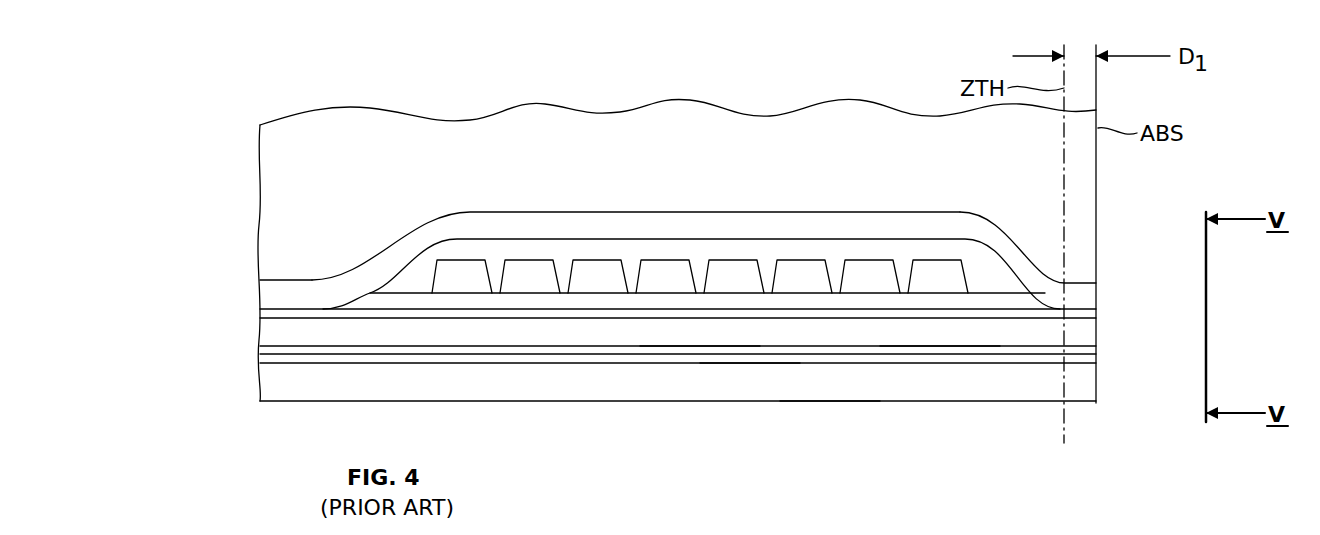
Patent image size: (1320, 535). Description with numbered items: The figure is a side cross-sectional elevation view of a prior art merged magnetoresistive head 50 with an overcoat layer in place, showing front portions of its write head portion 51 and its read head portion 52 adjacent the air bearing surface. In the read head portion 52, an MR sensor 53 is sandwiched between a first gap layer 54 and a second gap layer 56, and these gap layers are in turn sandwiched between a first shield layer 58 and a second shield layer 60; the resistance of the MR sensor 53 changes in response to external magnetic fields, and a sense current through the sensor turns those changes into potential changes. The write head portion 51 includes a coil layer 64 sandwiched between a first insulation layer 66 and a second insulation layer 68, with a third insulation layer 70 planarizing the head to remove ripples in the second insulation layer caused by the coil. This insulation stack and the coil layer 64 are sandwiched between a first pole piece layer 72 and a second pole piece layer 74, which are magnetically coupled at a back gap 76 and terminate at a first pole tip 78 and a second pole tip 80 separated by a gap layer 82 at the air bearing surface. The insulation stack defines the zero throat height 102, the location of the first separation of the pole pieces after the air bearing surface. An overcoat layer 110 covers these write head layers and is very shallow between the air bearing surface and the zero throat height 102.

The merged magnetoresistive (MR) head 50 is at (255, 97).
The overcoat layer 110 is at (330, 130).
The back gap 76 is at (294, 280).
The second pole piece layer 74 is at (830, 222).
The second insulation layer 68 is at (985, 277).
The third insulation layer 70 is at (497, 240).
The first insulation layer 66 is at (602, 302).
The coil layer 64 is at (661, 265).
The second pole tip 80 is at (1088, 294).
The gap layer 82 is at (1096, 317).
The first pole tip 78 is at (1096, 340).
The MR sensor 53 is at (1096, 357).
The second gap layer 56 is at (714, 346).
The first gap layer 54 is at (748, 362).
The first shield layer 58 is at (827, 388).
The second shield layer 60 is at (940, 398).
The first pole piece layer 72 is at (932, 335).
The zero throat height (ZTH) 102 is at (1064, 180).
The write head portion 51 is at (250, 210).
The read head portion 52 is at (250, 401).